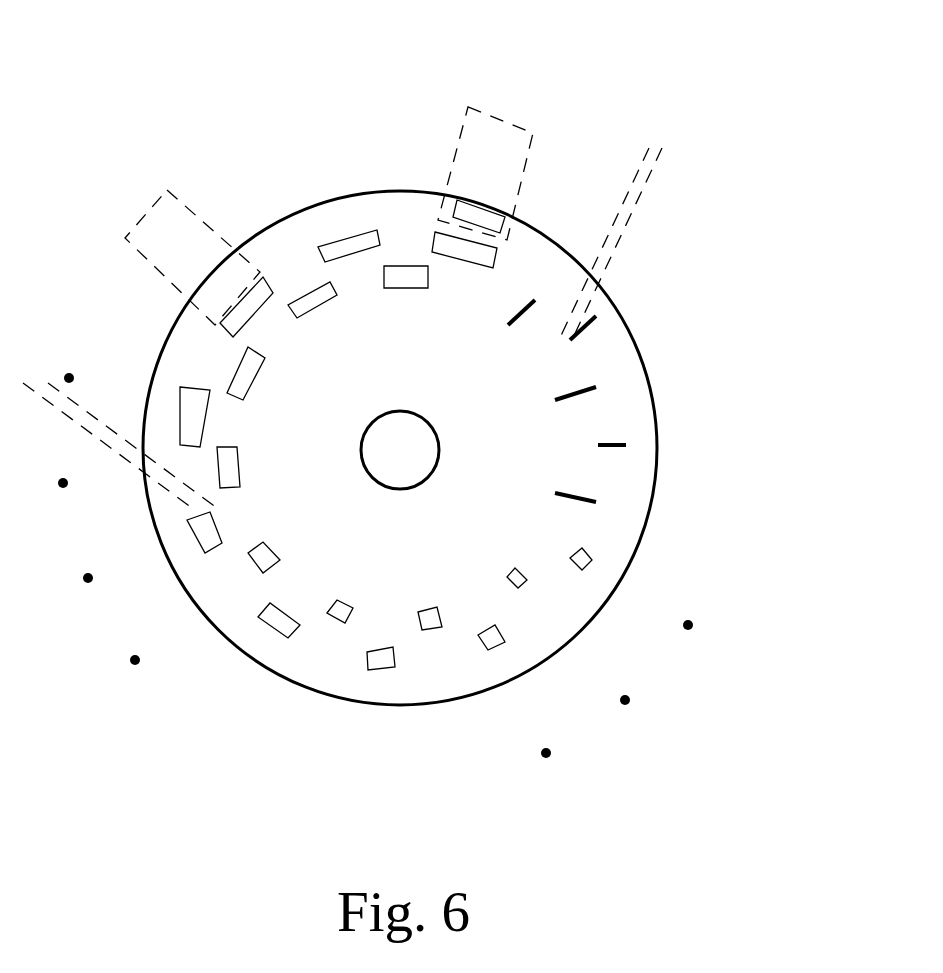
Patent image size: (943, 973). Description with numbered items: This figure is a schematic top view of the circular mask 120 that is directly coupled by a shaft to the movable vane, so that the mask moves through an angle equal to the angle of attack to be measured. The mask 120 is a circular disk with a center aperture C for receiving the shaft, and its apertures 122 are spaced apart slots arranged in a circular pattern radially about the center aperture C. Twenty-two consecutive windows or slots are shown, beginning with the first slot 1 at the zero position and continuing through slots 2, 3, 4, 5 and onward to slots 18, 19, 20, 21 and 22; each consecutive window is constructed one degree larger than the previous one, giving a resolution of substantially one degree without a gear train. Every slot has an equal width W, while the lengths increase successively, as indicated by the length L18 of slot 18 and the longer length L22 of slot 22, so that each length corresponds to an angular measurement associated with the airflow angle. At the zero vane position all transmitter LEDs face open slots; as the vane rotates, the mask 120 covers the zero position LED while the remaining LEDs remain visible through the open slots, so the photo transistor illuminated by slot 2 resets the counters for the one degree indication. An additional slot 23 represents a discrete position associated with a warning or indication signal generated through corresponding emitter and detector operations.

The first window or slot 1 is at (522, 307).
The second window or slot 2 is at (586, 326).
The third window or slot 3 is at (579, 393).
The fourth window or slot 4 is at (629, 445).
The fifth window or slot 5 is at (589, 500).
The eighteenth window or slot 18 is at (236, 295).
The nineteenth window or slot 19 is at (301, 290).
The twentieth window or slot 20 is at (346, 229).
The twenty-first window or slot 21 is at (408, 264).
The twenty-second window or slot 22 is at (449, 229).
The discrete position slot 23 is at (483, 212).
The slot length L18 is at (126, 237).
The slot length L22 is at (497, 113).
The slot width W is at (347, 310).
The center aperture C is at (396, 467).
The circular mask 120 is at (757, 145).
The apertures 122 is at (445, 660).